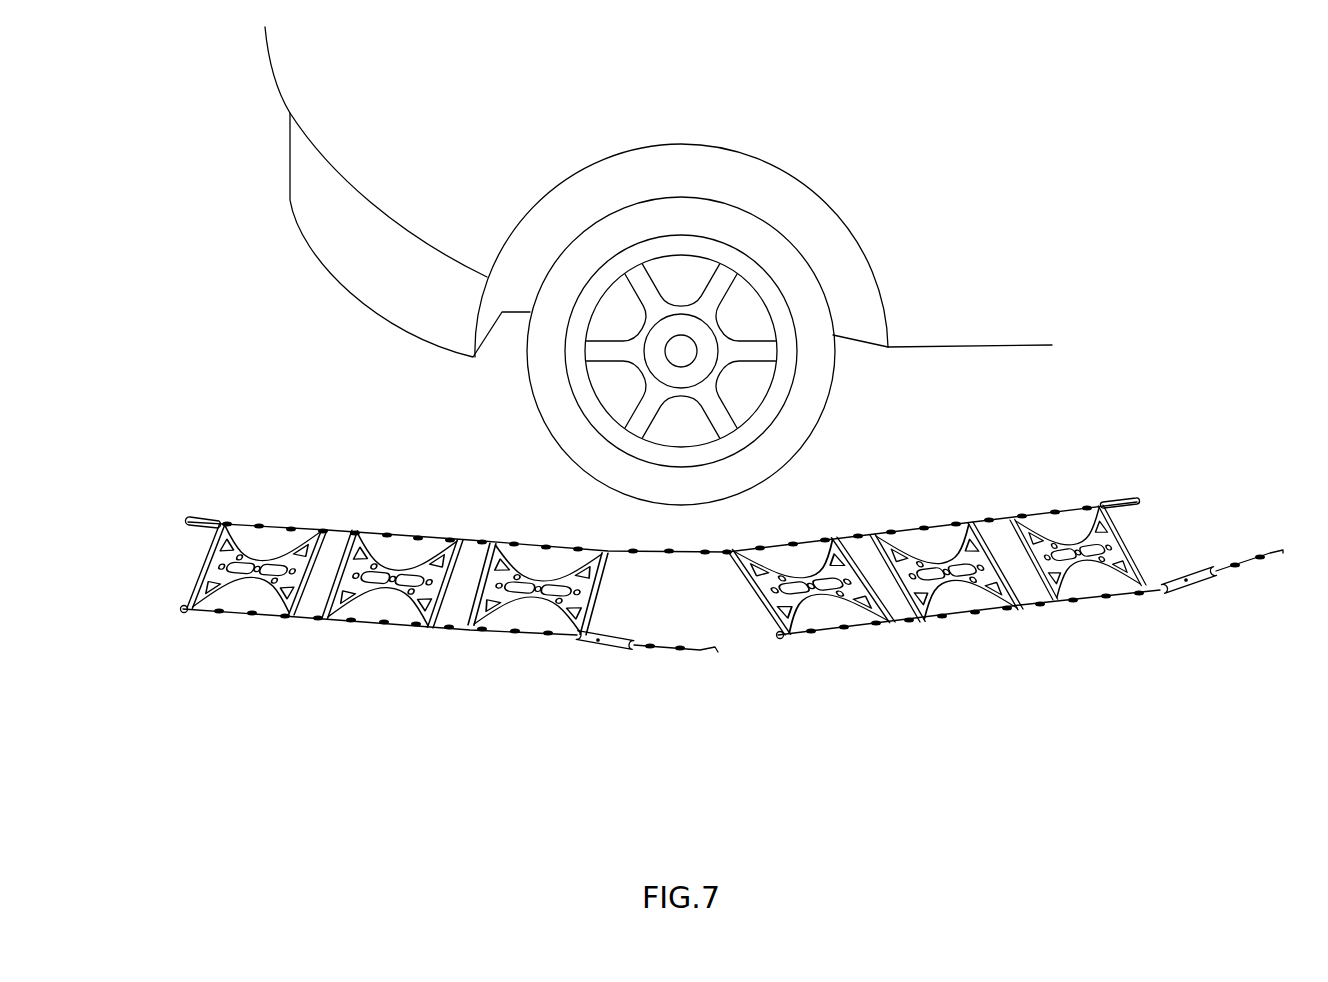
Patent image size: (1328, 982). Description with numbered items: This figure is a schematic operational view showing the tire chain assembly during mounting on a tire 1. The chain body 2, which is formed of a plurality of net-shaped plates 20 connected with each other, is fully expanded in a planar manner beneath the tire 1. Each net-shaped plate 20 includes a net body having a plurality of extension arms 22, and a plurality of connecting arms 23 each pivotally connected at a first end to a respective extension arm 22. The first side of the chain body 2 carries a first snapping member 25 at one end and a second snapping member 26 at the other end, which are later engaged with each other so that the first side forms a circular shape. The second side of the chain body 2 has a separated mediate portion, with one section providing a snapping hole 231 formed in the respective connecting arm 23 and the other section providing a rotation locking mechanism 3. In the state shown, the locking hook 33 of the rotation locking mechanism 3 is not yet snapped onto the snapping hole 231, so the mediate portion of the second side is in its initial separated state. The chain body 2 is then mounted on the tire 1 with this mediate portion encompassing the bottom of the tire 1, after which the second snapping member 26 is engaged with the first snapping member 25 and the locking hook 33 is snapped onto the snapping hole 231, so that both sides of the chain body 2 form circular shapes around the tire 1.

The tire 1 is at (550, 402).
The chain body 2 is at (696, 587).
The rotation locking mechanism 3 is at (615, 652).
The net-shaped plate 20 is at (1135, 531).
The extension arm 22 is at (193, 593).
The connecting arm 23 is at (210, 616).
The snapping hole 231 is at (183, 612).
The first snapping member 25 is at (188, 519).
The second snapping member 26 is at (1125, 498).
The locking hook 33 is at (705, 649).